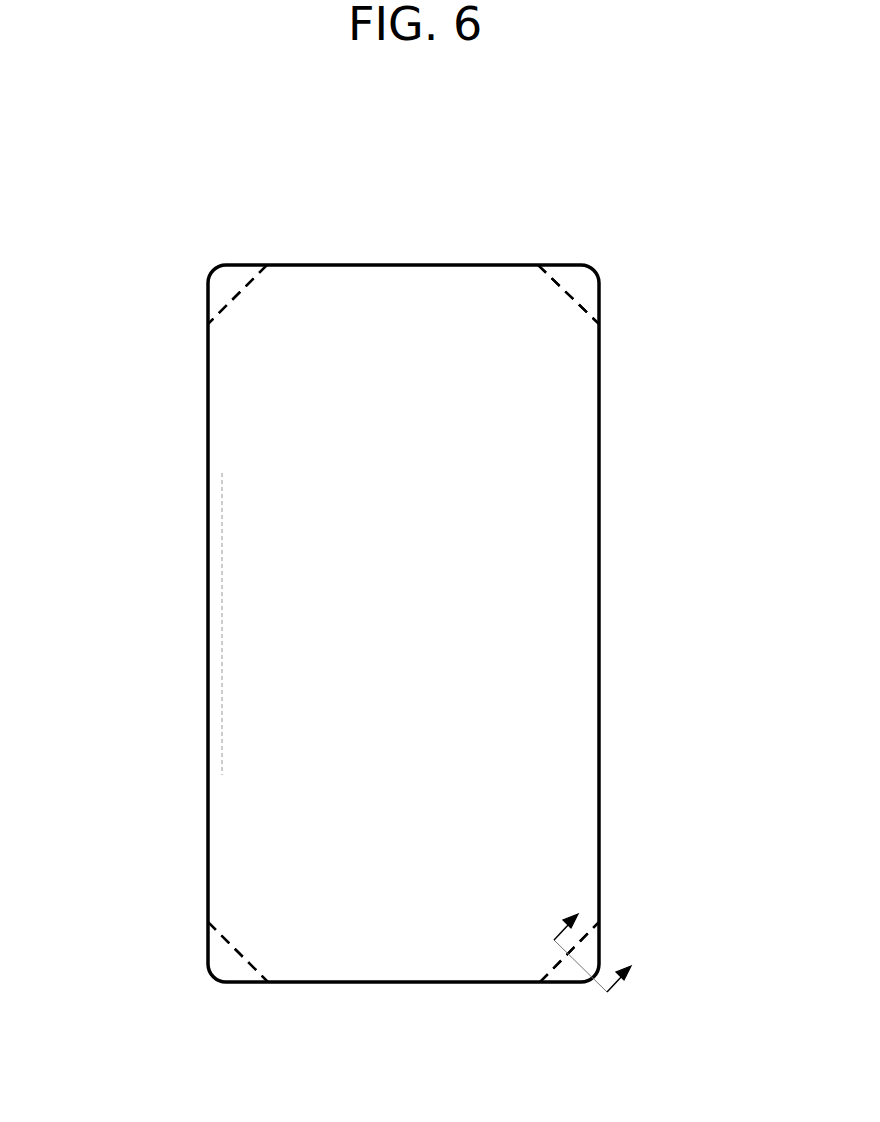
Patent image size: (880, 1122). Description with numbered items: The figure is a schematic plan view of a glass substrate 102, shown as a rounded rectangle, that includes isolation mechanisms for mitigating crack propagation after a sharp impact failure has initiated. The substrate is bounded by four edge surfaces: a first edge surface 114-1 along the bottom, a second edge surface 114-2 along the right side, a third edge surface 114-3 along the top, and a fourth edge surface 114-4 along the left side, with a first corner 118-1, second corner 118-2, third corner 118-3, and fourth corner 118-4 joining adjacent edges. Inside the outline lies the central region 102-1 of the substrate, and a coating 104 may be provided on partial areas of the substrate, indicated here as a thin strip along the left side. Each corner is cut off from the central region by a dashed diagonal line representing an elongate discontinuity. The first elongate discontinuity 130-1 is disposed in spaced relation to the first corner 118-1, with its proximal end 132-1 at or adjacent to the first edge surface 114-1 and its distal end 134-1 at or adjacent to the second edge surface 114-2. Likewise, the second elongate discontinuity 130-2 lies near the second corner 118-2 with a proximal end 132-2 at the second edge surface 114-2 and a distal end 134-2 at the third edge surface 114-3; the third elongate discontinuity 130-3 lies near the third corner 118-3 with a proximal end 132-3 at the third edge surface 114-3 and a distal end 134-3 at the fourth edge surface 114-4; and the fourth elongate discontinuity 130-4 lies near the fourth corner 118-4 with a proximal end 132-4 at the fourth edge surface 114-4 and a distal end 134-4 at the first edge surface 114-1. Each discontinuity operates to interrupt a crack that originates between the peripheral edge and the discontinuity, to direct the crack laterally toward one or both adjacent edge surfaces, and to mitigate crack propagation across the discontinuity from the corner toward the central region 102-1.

The glass substrate 102 is at (430, 97).
The central region 102-1 is at (455, 604).
The coating 104 is at (222, 595).
The first edge surface 114-1 is at (343, 985).
The second edge surface 114-2 is at (600, 622).
The third edge surface 114-3 is at (390, 258).
The fourth edge surface 114-4 is at (207, 672).
The first corner 118-1 is at (595, 995).
The second corner 118-2 is at (598, 263).
The third corner 118-3 is at (197, 270).
The fourth corner 118-4 is at (208, 988).
The first elongate discontinuity 130-1 is at (548, 962).
The second elongate discontinuity 130-2 is at (572, 297).
The third elongate discontinuity 130-3 is at (240, 290).
The fourth elongate discontinuity 130-4 is at (247, 950).
The proximal end 132-1 is at (536, 988).
The proximal end 132-2 is at (608, 330).
The proximal end 132-3 is at (270, 256).
The proximal end 132-4 is at (203, 920).
The distal end 134-1 is at (603, 922).
The distal end 134-2 is at (530, 252).
The distal end 134-3 is at (200, 325).
The distal end 134-4 is at (272, 988).